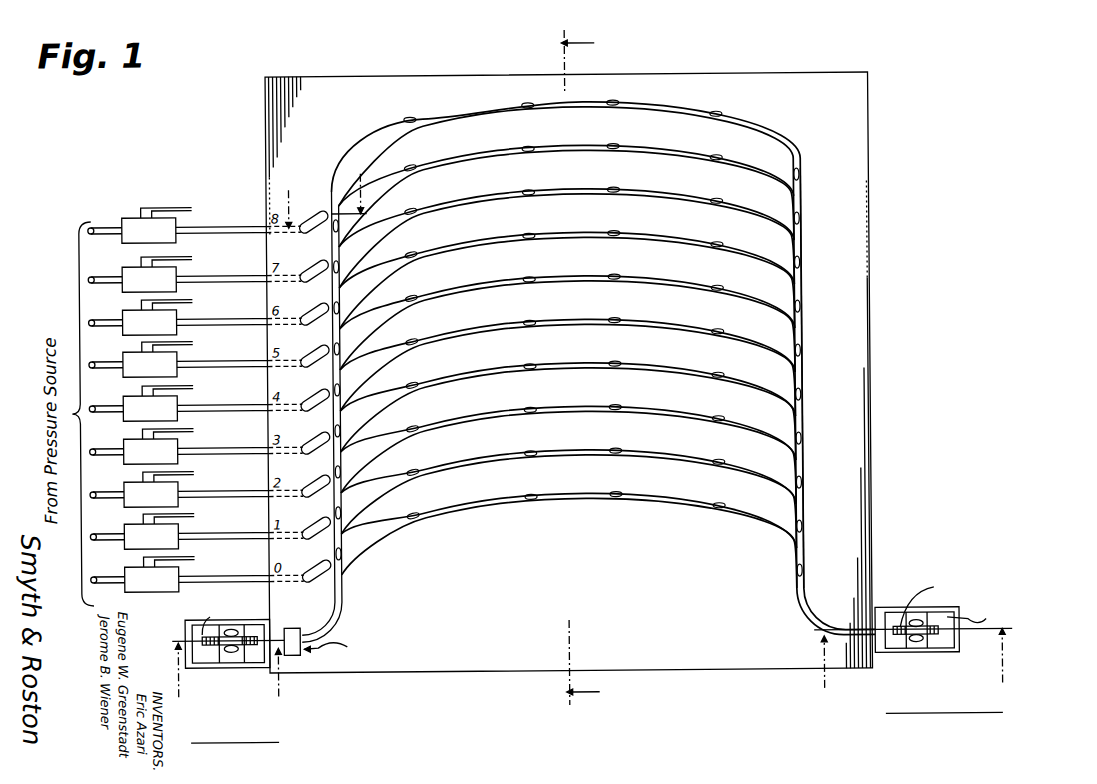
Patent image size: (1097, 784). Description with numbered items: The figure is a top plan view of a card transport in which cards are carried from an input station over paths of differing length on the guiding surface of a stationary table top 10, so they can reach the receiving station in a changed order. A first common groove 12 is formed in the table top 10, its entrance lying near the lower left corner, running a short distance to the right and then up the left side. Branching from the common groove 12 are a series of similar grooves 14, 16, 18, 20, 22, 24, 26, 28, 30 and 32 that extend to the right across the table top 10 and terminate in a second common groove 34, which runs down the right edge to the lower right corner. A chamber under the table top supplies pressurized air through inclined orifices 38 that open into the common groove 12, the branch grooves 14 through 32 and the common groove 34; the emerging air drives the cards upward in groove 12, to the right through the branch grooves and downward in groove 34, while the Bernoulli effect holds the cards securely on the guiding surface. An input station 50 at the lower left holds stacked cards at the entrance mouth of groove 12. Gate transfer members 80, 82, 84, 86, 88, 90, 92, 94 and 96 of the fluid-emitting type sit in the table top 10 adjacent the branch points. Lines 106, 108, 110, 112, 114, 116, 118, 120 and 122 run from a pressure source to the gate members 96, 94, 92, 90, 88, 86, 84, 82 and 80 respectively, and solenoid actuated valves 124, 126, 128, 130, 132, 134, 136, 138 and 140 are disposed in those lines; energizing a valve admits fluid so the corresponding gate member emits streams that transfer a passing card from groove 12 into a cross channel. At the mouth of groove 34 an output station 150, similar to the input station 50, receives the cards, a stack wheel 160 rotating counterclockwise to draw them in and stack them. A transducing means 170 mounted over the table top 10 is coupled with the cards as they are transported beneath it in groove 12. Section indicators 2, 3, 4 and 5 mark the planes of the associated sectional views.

The section line 2- 2 is at (588, 367).
The section line 3- 3 is at (228, 683).
The section line 4- 4 is at (913, 667).
The section line 5- 5 is at (324, 190).
The table top 10 is at (392, 660).
The first common groove 12 is at (340, 158).
The branch groove 14 is at (594, 500).
The branch groove 16 is at (594, 456).
The branch groove 18 is at (594, 412).
The branch groove 20 is at (594, 369).
The branch groove 22 is at (594, 326).
The branch groove 24 is at (594, 282).
The branch groove 26 is at (594, 238).
The branch groove 28 is at (594, 195).
The branch groove 30 is at (594, 152).
The branch groove 32 is at (594, 108).
The second common groove 34 is at (805, 333).
The orifices 38 is at (805, 558).
The input station 50 is at (255, 662).
The gate transfer member 80 is at (321, 565).
The gate transfer member 82 is at (321, 522).
The gate transfer member 84 is at (321, 480).
The gate transfer member 86 is at (321, 437).
The gate transfer member 88 is at (321, 394).
The gate transfer member 90 is at (321, 350).
The gate transfer member 92 is at (321, 308).
The gate transfer member 94 is at (321, 265).
The gate transfer member 96 is at (321, 216).
The line 106 is at (192, 224).
The line 108 is at (192, 273).
The line 110 is at (192, 316).
The line 112 is at (192, 358).
The line 114 is at (192, 402).
The line 116 is at (192, 445).
The line 118 is at (192, 488).
The line 120 is at (192, 530).
The line 122 is at (192, 573).
The solenoid actuated valve 124 is at (140, 226).
The solenoid actuated valve 126 is at (140, 275).
The solenoid actuated valve 128 is at (140, 318).
The solenoid actuated valve 130 is at (141, 360).
The solenoid actuated valve 132 is at (141, 404).
The solenoid actuated valve 134 is at (141, 447).
The solenoid actuated valve 136 is at (142, 490).
The solenoid actuated valve 138 is at (142, 532).
The solenoid actuated valve 140 is at (143, 575).
The output station 150 is at (886, 655).
The stack wheel 160 is at (934, 645).
The transducing means 170 is at (290, 653).